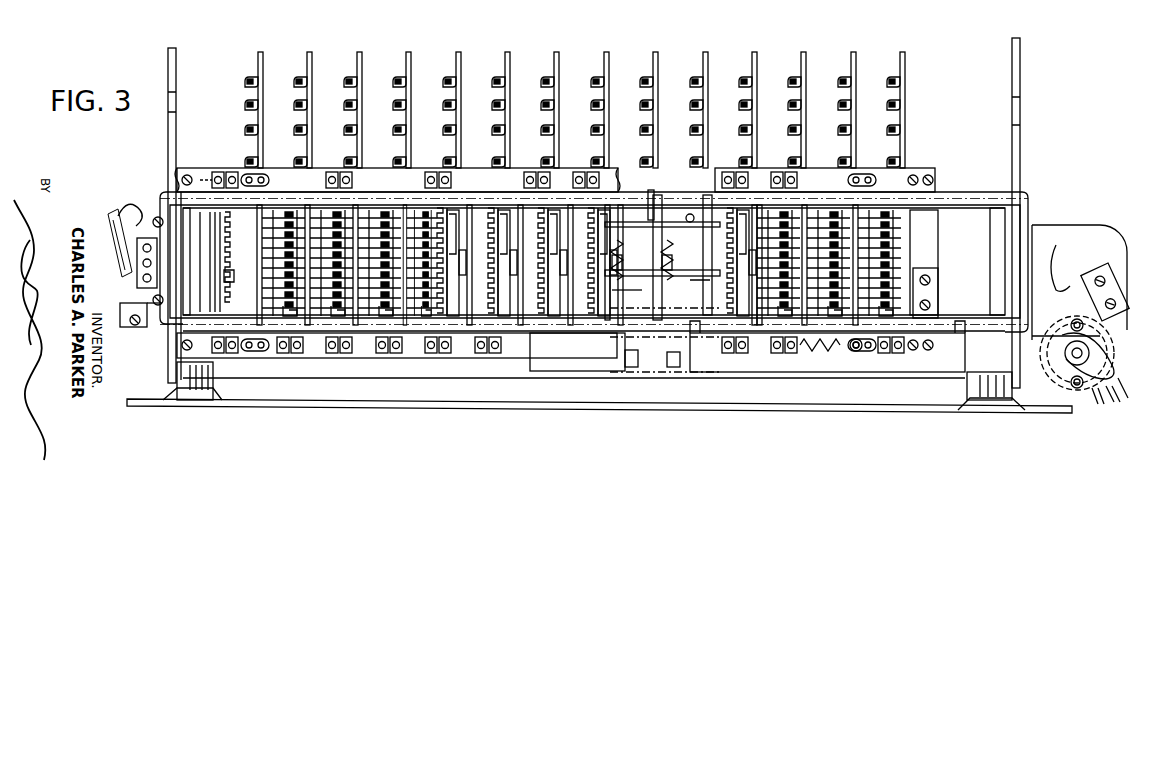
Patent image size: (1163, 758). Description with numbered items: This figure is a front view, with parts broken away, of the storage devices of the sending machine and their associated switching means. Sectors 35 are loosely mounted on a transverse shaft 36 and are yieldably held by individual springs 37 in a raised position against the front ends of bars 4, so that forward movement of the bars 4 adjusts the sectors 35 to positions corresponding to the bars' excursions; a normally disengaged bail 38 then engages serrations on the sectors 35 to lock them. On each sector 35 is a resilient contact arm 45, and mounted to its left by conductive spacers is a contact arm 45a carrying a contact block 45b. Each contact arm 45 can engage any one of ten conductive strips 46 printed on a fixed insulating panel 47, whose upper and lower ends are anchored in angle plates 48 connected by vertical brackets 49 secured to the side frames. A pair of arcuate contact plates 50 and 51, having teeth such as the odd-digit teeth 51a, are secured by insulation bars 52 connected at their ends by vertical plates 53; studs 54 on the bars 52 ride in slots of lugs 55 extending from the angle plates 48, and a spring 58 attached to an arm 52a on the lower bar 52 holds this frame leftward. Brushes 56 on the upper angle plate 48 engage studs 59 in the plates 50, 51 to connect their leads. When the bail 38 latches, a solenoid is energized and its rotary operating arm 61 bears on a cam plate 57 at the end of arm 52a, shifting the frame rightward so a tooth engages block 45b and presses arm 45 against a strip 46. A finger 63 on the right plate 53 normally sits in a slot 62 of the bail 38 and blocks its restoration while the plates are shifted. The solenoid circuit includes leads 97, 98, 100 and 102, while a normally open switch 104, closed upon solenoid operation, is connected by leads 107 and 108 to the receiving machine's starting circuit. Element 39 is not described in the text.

The bars 4 is at (410, 60).
The sectors 35 is at (652, 290).
The transverse shaft 36 is at (467, 288).
The springs 37 is at (642, 257).
The bail 38 is at (130, 306).
The block 39 is at (636, 368).
The resilient contact arm 45 is at (664, 208).
The contact arm 45a is at (650, 218).
The contact block 45b is at (690, 220).
The conductive strips 46 is at (322, 322).
The insulating panel 47 is at (396, 320).
The angle plates 48 is at (192, 205).
The brackets 49 is at (164, 204).
The contact plate 50 is at (228, 183).
The contact plate 51 is at (490, 178).
The teeth 51a is at (224, 280).
The insulation bars 52 is at (190, 172).
The arm 52a is at (584, 363).
The vertical plates 53 is at (216, 257).
The studs 54 is at (858, 352).
The lugs 55 is at (260, 178).
The brushes 56 is at (340, 172).
The cam plate 57 is at (1126, 396).
The spring 58 is at (814, 352).
The studs 59 is at (440, 170).
The rotary operating arm 61 is at (1106, 346).
The slot 62 is at (936, 308).
The finger 63 is at (930, 288).
The lead 97 is at (1092, 404).
The lead 98 is at (1116, 404).
The lead 100 is at (116, 214).
The lead 102 is at (140, 202).
The normally open switch 104 is at (1120, 270).
The lead 107 is at (1082, 252).
The lead 108 is at (1082, 250).